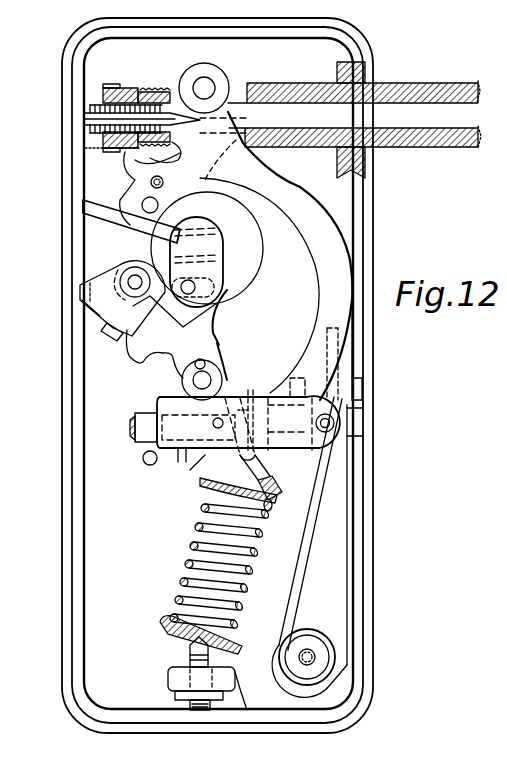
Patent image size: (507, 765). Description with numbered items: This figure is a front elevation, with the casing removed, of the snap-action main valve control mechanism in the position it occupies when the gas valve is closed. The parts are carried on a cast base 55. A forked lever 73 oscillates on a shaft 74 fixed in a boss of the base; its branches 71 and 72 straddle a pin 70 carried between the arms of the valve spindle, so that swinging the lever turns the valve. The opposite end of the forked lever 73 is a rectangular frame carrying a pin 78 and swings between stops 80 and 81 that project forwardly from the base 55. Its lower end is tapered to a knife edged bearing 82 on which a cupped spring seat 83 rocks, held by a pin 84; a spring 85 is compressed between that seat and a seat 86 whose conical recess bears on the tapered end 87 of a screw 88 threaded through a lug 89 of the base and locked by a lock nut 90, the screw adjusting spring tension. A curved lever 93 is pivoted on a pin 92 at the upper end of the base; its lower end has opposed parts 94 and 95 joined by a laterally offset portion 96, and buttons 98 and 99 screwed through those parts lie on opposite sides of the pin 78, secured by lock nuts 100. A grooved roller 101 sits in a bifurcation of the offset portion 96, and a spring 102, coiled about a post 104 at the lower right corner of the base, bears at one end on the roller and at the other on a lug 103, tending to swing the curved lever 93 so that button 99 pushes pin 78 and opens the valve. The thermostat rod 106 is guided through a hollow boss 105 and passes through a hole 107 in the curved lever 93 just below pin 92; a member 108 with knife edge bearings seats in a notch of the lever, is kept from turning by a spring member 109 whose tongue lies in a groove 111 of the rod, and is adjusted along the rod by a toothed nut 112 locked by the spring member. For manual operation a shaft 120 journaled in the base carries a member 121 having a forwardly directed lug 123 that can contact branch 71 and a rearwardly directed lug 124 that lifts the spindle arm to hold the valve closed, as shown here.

The base 55 is at (115, 48).
The nut 112 is at (103, 94).
The groove 111 is at (90, 119).
The spring member 109 is at (140, 152).
The member 108 is at (188, 80).
The pin 92 is at (213, 82).
The hollow boss 105 is at (308, 83).
The rod 106 is at (418, 107).
The hole 107 is at (252, 149).
The curved lever 93 is at (312, 188).
The shaft 120 is at (137, 268).
The rearwardly directed lug 124 is at (80, 290).
The member 121 is at (95, 312).
The forwardly directed lug 123 is at (108, 332).
The branch 71 is at (135, 325).
The pin 70 is at (200, 295).
The branch 72 is at (228, 300).
The forked lever 73 is at (212, 347).
The shaft 74 is at (192, 382).
The pin 78 is at (240, 396).
The button 99 is at (242, 398).
The part 95 is at (290, 390).
The lock nuts 100 is at (310, 398).
The part 94 is at (158, 407).
The stop 80 is at (150, 465).
The laterally offset portion 96 is at (181, 463).
The button 98 is at (207, 452).
The stop 81 is at (262, 460).
The knife edged bearing 82 is at (282, 486).
The cupped spring seat 83 is at (270, 510).
The pin 84 is at (205, 506).
The spring 85 is at (188, 562).
The seat 86 is at (160, 626).
The tapered end 87 is at (192, 642).
The lug 89 is at (168, 680).
The lock nut 90 is at (182, 705).
The screw 88 is at (238, 674).
The spring 102 is at (300, 566).
The post 104 is at (310, 650).
The lug 103 is at (362, 390).
The grooved roller 101 is at (334, 423).